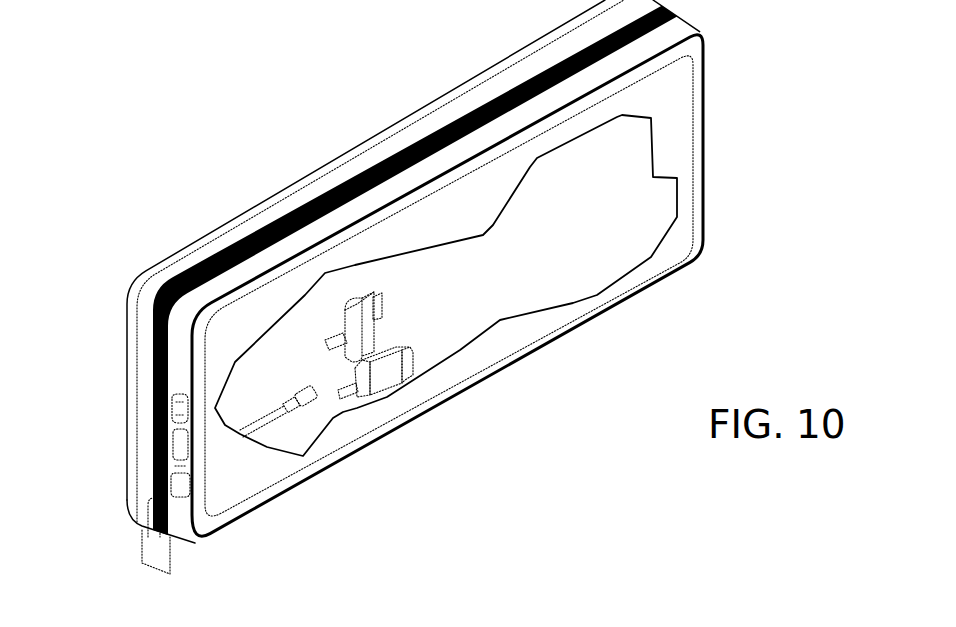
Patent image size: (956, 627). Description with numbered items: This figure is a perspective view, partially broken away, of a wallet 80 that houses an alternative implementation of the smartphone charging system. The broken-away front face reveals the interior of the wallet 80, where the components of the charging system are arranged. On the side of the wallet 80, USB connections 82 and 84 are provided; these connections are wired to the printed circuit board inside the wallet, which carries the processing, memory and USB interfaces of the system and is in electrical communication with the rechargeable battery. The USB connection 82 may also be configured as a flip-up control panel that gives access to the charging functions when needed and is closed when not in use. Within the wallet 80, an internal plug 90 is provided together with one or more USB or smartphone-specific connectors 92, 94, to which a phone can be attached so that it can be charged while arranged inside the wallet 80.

The wallet 80 is at (213, 212).
The USB connection 82 is at (178, 413).
The USB connection 84 is at (178, 458).
The internal plug 90 is at (297, 400).
The connector 92 is at (373, 392).
The connector 94 is at (367, 320).